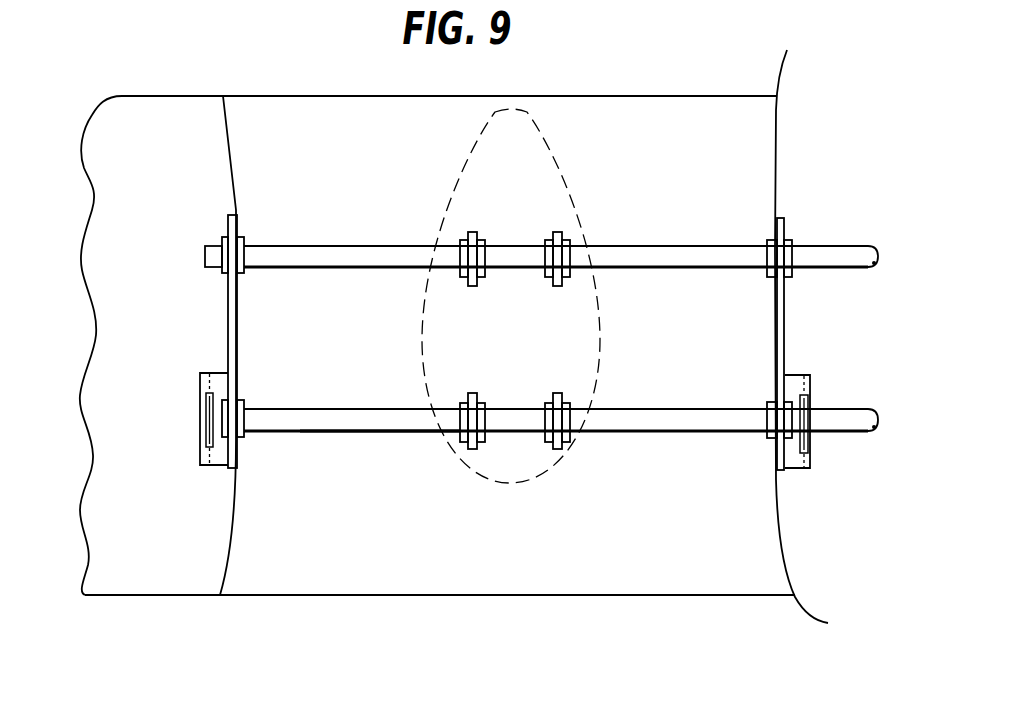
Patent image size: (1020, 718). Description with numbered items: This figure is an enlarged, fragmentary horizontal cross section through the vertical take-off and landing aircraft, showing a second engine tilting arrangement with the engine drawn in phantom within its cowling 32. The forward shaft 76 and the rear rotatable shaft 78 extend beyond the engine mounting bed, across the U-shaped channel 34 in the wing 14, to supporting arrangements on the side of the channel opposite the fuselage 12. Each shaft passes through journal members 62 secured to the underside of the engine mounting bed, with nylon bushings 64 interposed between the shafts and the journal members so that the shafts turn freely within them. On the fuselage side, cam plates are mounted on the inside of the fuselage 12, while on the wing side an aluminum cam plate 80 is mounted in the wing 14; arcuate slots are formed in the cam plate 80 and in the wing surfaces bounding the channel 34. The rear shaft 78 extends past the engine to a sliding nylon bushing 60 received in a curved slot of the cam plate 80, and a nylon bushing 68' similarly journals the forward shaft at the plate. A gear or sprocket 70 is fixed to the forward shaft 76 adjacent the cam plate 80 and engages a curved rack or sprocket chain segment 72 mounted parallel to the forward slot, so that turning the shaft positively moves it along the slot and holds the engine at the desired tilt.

The fuselage 12 is at (780, 63).
The wing 14 is at (160, 117).
The cowling 32 is at (473, 155).
The U-shaped channel 34 is at (647, 117).
The nylon bushing 60 is at (770, 242).
The journal member 62 is at (472, 288).
The nylon bushing 64 is at (462, 446).
The bushing 68' is at (261, 399).
The gear or sprocket 70 is at (199, 398).
The curved rack or sprocket chain segment 72 is at (210, 364).
The forward shaft 76 is at (653, 425).
The rear rotatable shaft 78 is at (675, 257).
The cam plate 80 is at (228, 295).